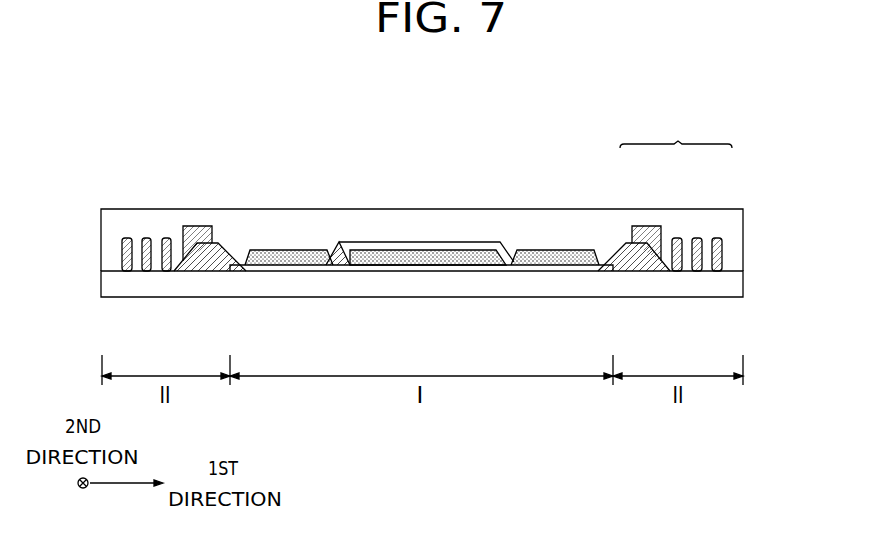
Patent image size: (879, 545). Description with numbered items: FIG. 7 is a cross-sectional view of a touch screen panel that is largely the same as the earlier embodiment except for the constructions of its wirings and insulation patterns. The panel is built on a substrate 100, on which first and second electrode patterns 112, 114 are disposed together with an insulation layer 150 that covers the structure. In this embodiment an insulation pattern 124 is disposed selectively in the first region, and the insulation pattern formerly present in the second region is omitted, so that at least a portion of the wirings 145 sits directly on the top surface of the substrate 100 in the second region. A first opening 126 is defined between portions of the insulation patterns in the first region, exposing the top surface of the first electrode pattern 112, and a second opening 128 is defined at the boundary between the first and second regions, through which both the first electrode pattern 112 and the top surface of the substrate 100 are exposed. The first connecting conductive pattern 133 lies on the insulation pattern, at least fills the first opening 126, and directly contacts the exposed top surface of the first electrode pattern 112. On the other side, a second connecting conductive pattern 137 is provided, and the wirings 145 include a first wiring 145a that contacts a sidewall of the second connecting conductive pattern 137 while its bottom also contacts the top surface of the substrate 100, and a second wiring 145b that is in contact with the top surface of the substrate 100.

The substrate 100 is at (738, 282).
The first electrode pattern 112 is at (308, 271).
The second electrode pattern 114 is at (415, 265).
The insulation pattern 124 is at (283, 250).
The first opening 126 is at (340, 243).
The second opening 128 is at (223, 246).
The first connecting conductive pattern 133 is at (406, 248).
The second connecting conductive pattern 137 is at (612, 248).
The wirings 145 is at (676, 132).
The first wiring 145a is at (644, 240).
The second wiring 145b is at (714, 239).
The insulation layer 150 is at (741, 225).